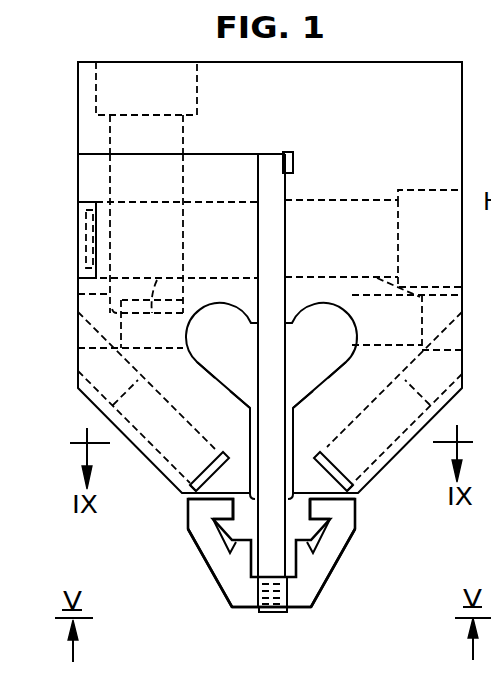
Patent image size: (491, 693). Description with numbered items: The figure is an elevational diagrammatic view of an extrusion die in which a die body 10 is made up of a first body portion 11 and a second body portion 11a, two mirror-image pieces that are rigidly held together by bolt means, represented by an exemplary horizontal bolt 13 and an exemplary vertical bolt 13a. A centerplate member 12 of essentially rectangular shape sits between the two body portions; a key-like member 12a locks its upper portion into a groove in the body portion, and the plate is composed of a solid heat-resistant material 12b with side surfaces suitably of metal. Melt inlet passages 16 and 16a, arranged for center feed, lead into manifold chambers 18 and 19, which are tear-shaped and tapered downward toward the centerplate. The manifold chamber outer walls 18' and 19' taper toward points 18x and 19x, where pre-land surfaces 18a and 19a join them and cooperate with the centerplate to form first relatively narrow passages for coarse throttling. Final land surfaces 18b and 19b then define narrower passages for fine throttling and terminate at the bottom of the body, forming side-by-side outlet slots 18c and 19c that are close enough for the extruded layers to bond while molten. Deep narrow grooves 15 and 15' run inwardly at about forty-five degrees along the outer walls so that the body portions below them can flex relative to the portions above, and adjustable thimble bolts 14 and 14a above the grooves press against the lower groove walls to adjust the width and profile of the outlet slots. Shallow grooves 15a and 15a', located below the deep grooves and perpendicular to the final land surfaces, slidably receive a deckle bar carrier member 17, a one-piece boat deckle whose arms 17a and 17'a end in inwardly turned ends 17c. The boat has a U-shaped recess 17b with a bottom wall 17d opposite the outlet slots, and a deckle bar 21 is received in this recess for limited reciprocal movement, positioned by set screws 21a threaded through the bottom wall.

The die body 10 is at (386, 60).
The first body portion 11 is at (450, 150).
The second body portion 11a is at (80, 186).
The centerplate member 12 is at (286, 178).
The key-like member 12a is at (287, 151).
The solid heat-resistant material 12b is at (286, 246).
The horizontal bolt 13 is at (417, 190).
The vertical bolt 13a is at (199, 108).
The adjustable thimble bolt 14 is at (447, 415).
The adjustable thimble bolt 14a is at (112, 420).
The deep narrow groove 15 is at (349, 457).
The deep narrow groove 15' is at (197, 457).
The shallow groove 15a is at (392, 497).
The shallow groove 15a' is at (150, 501).
The melt inlet passage 16 is at (407, 314).
The melt inlet passage 16a is at (130, 314).
The deckle bar carrier member 17 is at (299, 553).
The arm 17a is at (328, 568).
The arm 17'a is at (192, 582).
The U-shaped recess 17b is at (233, 548).
The inwardly turned end 17c is at (212, 516).
The bottom wall 17d is at (313, 598).
The manifold chamber 18 is at (321, 398).
The manifold chamber outer wall 18' is at (354, 365).
The pre-land surface 18a is at (294, 432).
The final land surface 18b is at (309, 485).
The outlet slot 18c is at (300, 580).
The point 18x is at (303, 388).
The manifold chamber 19 is at (222, 398).
The manifold chamber outer wall 19' is at (186, 363).
The pre-land surface 19a is at (230, 447).
The final land surface 19b is at (250, 493).
The outlet slot 19c is at (263, 568).
The point 19x is at (240, 398).
The deckle bar 21 is at (242, 607).
The set screw 21a is at (278, 613).